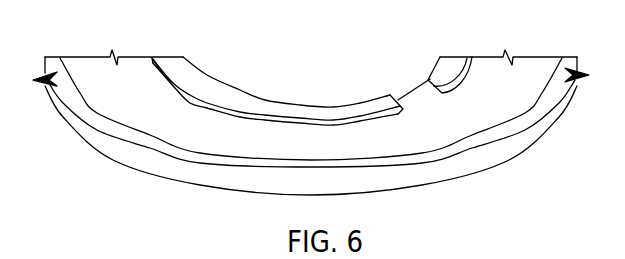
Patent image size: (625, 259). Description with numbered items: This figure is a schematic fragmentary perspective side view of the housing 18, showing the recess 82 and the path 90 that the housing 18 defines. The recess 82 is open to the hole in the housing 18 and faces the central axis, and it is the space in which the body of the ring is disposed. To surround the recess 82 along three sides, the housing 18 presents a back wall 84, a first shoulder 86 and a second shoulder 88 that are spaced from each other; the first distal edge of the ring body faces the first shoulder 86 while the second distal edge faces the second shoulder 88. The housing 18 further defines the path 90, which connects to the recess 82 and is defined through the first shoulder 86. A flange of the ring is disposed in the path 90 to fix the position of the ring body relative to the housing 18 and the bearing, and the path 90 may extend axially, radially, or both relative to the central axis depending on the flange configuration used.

The housing 18 is at (482, 155).
The recess 82 is at (531, 76).
The back wall 84 is at (325, 132).
The first shoulder 86 is at (185, 66).
The second shoulder 88 is at (207, 152).
The path 90 is at (416, 93).